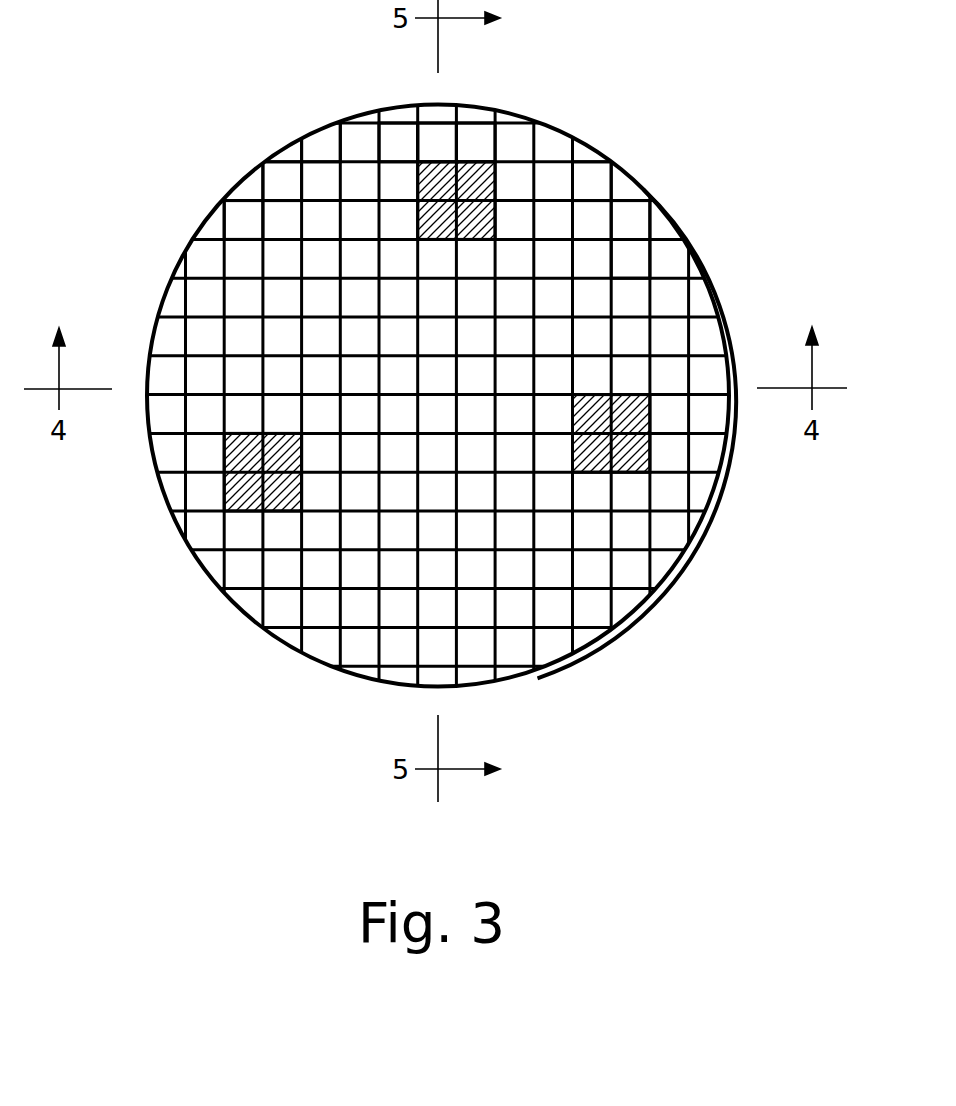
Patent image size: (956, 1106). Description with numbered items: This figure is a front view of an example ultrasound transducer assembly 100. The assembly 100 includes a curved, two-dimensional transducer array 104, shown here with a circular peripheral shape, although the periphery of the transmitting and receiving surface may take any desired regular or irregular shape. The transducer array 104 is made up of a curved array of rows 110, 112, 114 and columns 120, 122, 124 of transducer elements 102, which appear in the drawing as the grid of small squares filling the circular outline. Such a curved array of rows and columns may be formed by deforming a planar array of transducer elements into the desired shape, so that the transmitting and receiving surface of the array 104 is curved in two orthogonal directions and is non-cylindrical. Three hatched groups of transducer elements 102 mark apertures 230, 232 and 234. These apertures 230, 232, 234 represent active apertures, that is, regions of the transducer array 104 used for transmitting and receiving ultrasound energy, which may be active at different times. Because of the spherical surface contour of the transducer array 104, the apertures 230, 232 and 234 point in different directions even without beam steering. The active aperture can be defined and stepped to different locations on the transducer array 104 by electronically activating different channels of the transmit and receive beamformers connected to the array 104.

The transducer assembly 100 is at (678, 123).
The transducer elements 102 is at (600, 184).
The transducer array 104 is at (602, 657).
The row 110 is at (325, 142).
The row 112 is at (268, 183).
The row 114 is at (238, 222).
The column 120 is at (397, 133).
The column 122 is at (438, 132).
The column 124 is at (470, 133).
The aperture 230 is at (243, 513).
The aperture 232 is at (625, 472).
The aperture 234 is at (497, 187).